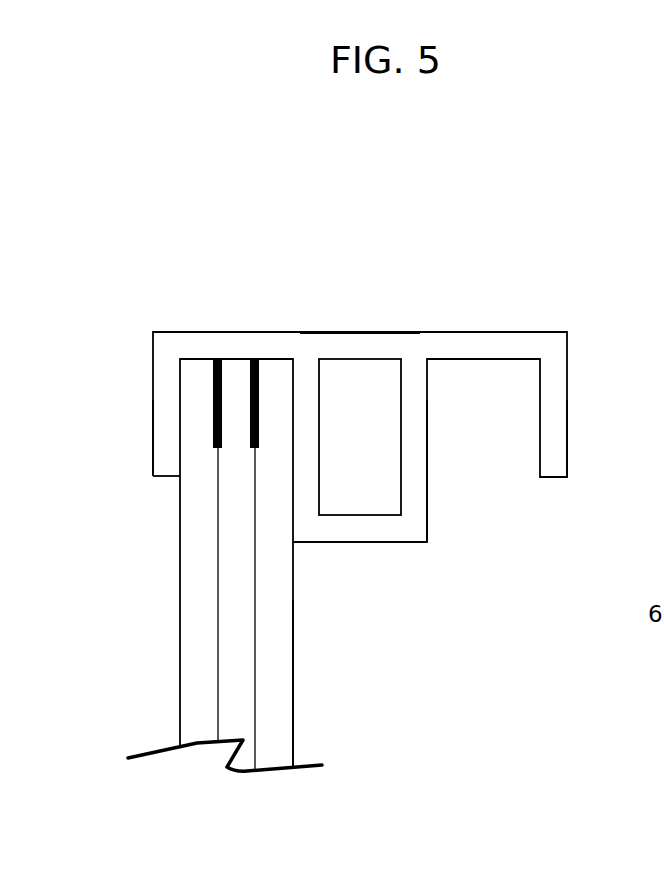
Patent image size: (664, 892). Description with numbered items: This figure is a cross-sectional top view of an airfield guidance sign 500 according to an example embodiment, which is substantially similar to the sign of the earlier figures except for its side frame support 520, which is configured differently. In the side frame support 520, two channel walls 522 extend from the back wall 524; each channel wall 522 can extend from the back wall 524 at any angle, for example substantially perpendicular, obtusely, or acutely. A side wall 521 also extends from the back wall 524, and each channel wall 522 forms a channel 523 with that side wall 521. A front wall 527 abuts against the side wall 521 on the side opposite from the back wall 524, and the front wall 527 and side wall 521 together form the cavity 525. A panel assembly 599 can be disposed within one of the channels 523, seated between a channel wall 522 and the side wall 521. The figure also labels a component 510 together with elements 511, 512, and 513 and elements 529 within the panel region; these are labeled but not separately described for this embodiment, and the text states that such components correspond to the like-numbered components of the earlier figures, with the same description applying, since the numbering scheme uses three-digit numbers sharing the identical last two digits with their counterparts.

The airfield guidance sign 500 is at (602, 203).
The tube 510 is at (190, 522).
The outer wall of tube 511 is at (280, 713).
The inner conductor line 512 is at (218, 625).
The inner conductor line 513 is at (257, 663).
The side frame support 520 is at (452, 330).
The side wall 521 is at (308, 467).
The channel wall 522 is at (168, 405).
The channel 523 is at (175, 480).
The back wall 524 is at (320, 342).
The cavity 525 is at (360, 437).
The front wall 527 is at (388, 542).
The heating elements 529 is at (262, 358).
The panel assembly 599 is at (175, 671).